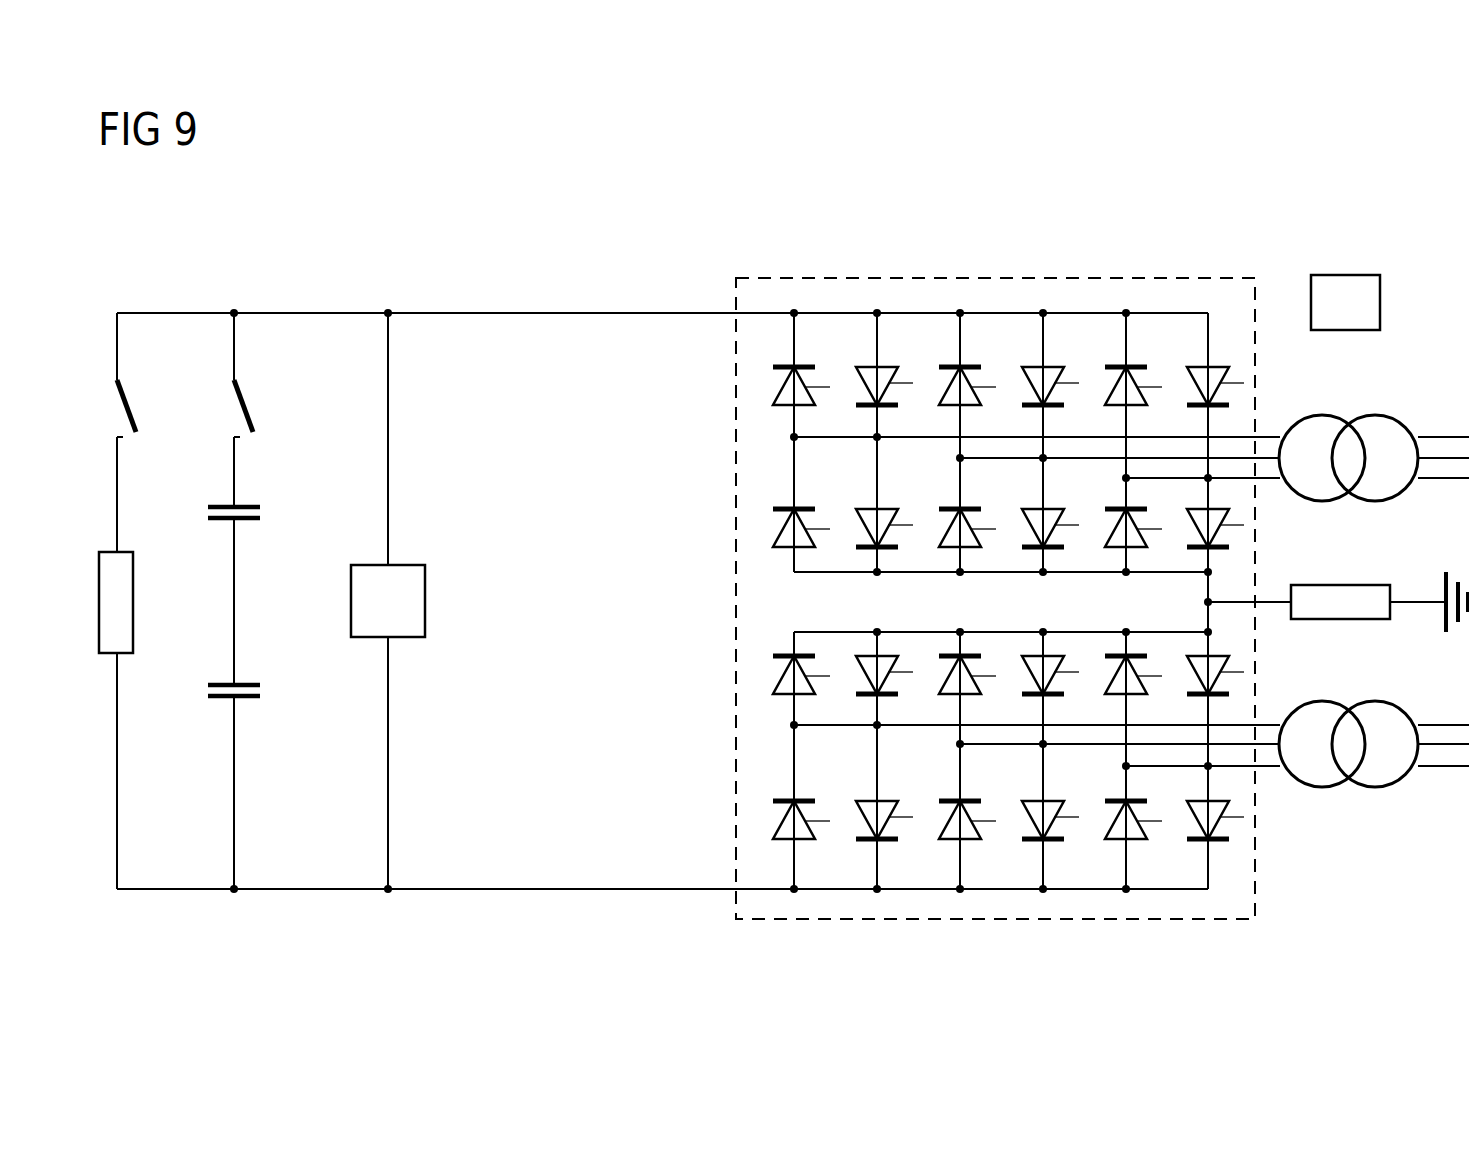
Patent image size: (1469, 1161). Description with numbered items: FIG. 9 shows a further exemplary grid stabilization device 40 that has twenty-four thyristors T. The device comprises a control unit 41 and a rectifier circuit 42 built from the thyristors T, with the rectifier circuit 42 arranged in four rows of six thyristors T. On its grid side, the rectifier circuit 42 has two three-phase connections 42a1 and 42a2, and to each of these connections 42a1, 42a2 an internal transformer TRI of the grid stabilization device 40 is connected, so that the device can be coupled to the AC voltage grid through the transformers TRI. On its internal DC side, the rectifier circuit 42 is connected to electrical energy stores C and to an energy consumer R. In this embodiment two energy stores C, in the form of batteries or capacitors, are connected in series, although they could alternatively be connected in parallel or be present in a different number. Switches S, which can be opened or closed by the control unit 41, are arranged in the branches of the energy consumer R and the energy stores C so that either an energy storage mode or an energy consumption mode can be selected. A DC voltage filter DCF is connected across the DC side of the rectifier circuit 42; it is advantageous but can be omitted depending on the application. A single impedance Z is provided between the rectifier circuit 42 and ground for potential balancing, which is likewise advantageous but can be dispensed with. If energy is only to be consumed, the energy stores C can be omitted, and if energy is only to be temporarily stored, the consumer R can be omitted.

The grid stabilization device 40 is at (157, 282).
The control unit 41 is at (1360, 325).
The rectifier circuit 42 is at (803, 278).
The three-phase connection 42a1 is at (1264, 425).
The three-phase connection 42a2 is at (1273, 783).
The switch S is at (128, 397).
The electrical energy store C is at (245, 505).
The energy consumer R is at (134, 604).
The DC voltage filter DCF is at (414, 618).
The thyristor T is at (782, 378).
The internal transformer TRI is at (1335, 416).
The impedance Z is at (1325, 583).